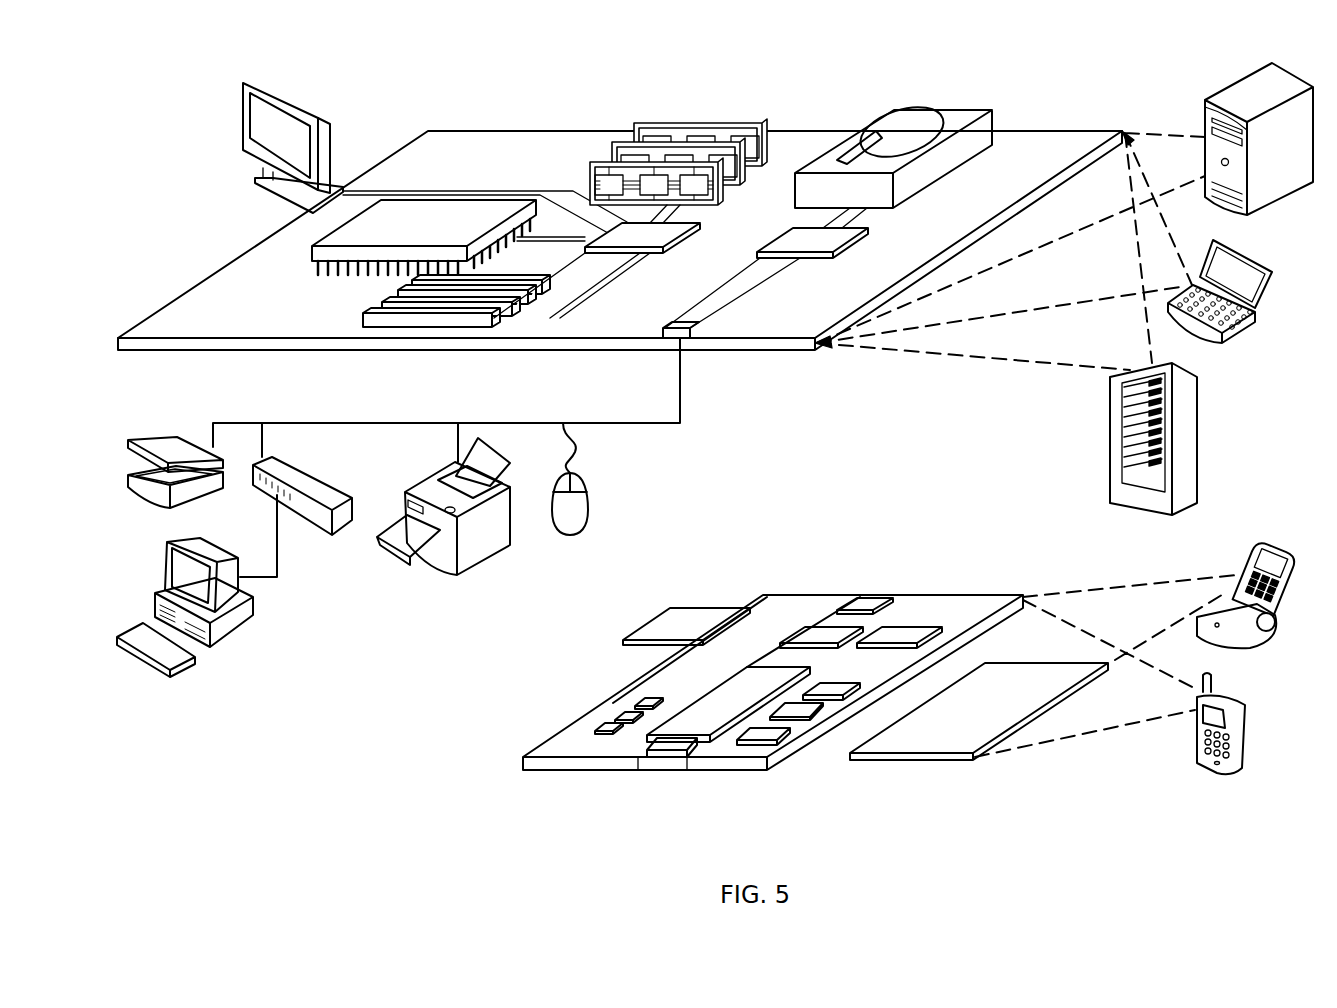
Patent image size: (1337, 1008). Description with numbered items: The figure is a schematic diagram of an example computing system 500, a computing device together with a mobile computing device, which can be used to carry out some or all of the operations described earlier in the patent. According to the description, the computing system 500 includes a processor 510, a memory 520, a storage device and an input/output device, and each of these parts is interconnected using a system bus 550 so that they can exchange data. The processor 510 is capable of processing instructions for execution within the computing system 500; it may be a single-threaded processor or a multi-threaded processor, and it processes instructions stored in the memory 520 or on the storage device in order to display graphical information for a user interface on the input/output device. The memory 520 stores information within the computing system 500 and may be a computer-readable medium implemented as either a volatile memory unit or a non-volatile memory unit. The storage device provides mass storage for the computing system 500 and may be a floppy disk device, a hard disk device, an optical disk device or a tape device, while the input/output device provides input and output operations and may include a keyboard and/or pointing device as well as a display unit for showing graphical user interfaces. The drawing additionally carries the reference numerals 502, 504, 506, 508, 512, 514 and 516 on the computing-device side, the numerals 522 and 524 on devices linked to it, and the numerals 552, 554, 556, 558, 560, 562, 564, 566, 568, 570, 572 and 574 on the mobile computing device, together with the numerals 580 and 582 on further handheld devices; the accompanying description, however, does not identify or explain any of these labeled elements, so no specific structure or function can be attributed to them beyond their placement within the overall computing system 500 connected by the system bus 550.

The computing system 500 is at (441, 104).
The processor 502 is at (313, 250).
The memory modules 504 is at (637, 96).
The hard disk drive 506 is at (890, 112).
The memory controller 508 is at (610, 232).
The processor 510 is at (395, 312).
The I/O controller 512 is at (792, 237).
The peripheral connector 514 is at (688, 340).
The display monitor 516 is at (246, 82).
The memory 520 is at (1204, 116).
The laptop computer 522 is at (1277, 266).
The server 524 is at (1110, 467).
The system bus 550 is at (500, 768).
The processor chip 552 is at (702, 735).
The display panel 554 is at (945, 745).
The memory chip 556 is at (760, 735).
The memory chip 558 is at (800, 712).
The memory chip 560 is at (830, 690).
The connector 562 is at (668, 760).
The discrete components 564 is at (608, 722).
The controller chip 566 is at (823, 634).
The controller chip 568 is at (907, 635).
The wireless chip 570 is at (872, 600).
The bus 572 is at (752, 600).
The battery 574 is at (676, 612).
The cellular phone 580 is at (1256, 555).
The mobile phone 582 is at (1196, 742).